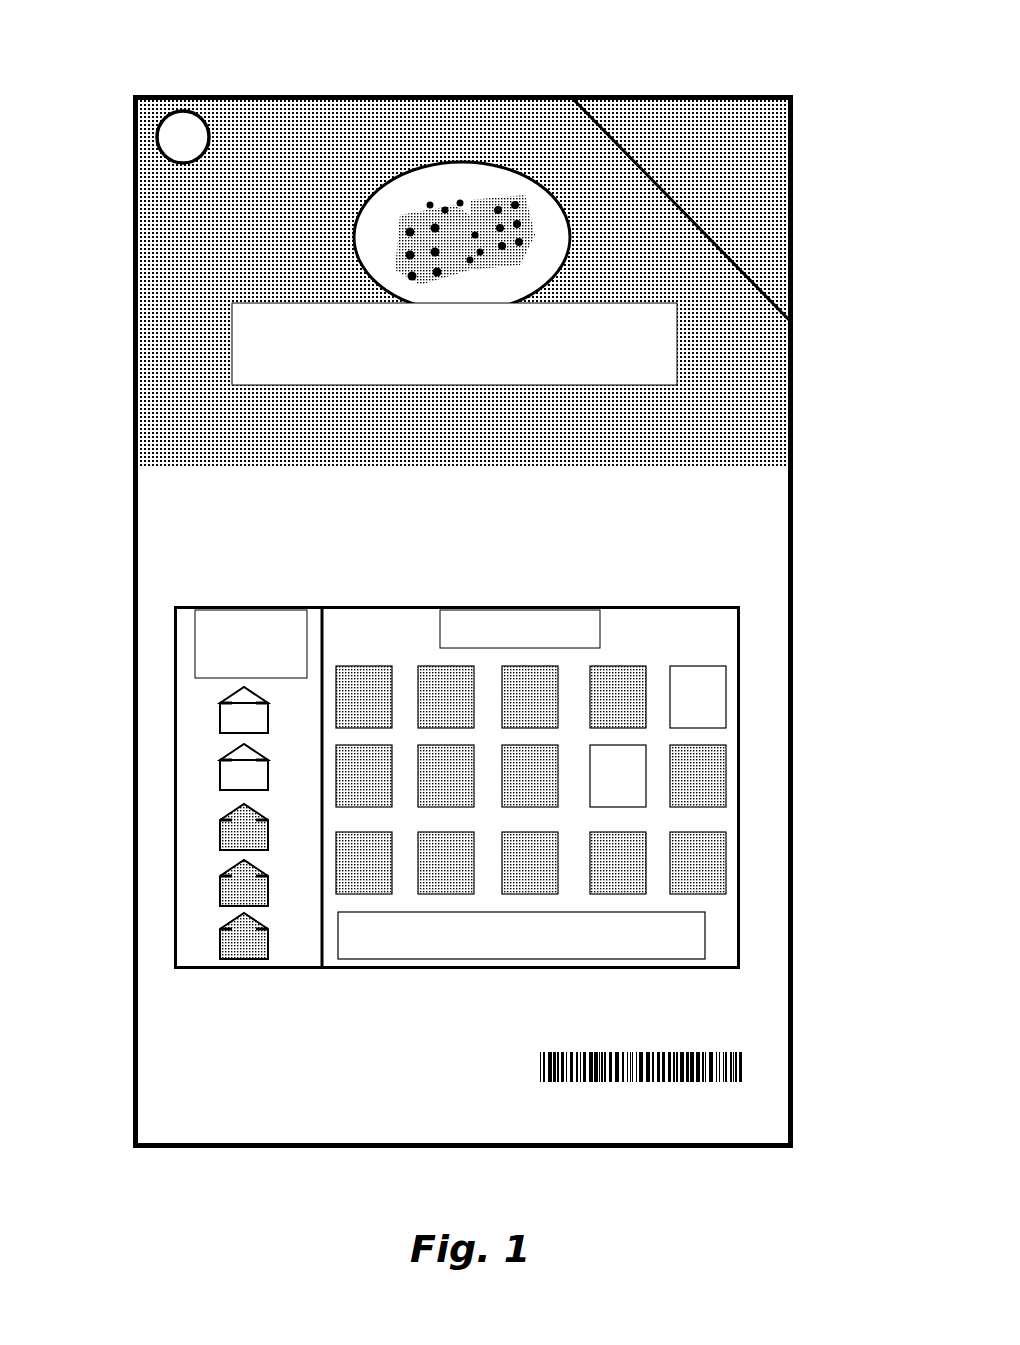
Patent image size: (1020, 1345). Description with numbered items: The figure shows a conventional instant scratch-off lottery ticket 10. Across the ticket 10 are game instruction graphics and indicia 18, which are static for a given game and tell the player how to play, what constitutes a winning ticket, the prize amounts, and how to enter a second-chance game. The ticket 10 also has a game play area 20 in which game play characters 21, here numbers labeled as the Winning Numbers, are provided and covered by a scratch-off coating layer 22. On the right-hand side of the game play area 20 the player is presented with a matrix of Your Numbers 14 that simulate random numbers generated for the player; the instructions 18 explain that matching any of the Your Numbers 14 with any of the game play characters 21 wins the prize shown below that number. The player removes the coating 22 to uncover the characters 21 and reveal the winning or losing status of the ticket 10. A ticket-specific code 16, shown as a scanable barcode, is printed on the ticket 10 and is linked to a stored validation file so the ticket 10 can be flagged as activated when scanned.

The scratch-off lottery ticket 10 is at (692, 82).
The Your Numbers 14 is at (716, 697).
The ticket-specific code 16 is at (743, 1070).
The game instruction graphics and indicia 18 is at (778, 188).
The game play area 20 is at (739, 650).
The game play characters 21 is at (218, 776).
The scratch-off coating layer 22 is at (218, 843).